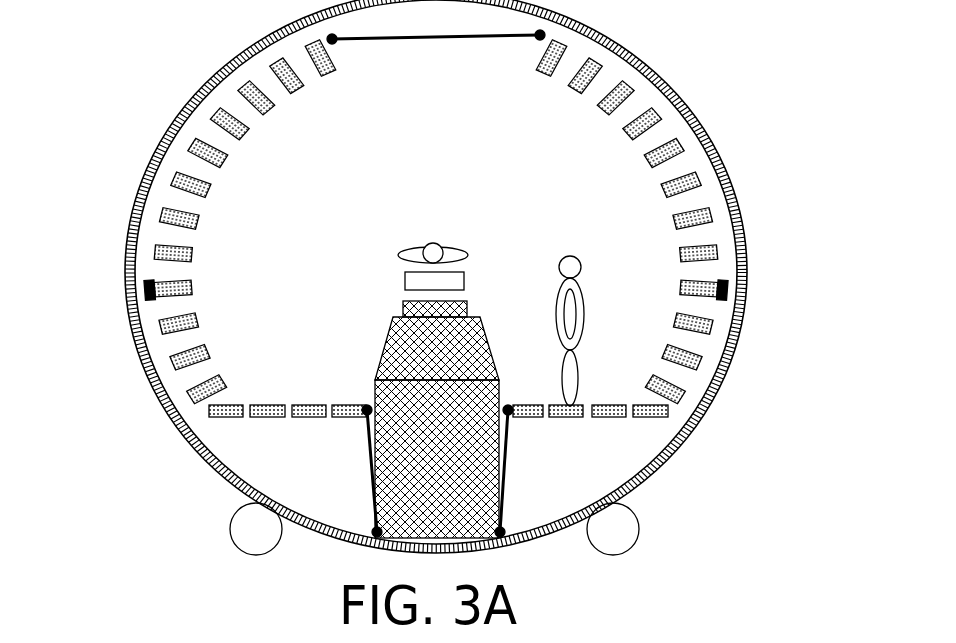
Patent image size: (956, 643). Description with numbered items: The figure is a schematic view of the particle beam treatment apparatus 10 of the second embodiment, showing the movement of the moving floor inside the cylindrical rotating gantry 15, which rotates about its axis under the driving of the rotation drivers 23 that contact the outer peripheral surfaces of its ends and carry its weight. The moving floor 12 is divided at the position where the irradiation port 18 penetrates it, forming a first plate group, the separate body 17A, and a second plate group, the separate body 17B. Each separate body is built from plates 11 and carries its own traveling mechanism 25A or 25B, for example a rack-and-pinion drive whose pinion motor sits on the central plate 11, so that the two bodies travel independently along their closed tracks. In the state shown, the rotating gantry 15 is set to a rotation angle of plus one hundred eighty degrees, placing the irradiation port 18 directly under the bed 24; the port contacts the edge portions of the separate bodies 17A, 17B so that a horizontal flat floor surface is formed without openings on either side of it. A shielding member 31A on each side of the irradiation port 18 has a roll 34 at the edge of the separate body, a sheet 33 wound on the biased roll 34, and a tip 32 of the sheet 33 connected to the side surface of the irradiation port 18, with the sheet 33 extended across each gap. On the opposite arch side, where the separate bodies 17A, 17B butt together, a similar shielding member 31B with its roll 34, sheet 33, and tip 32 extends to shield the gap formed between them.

The particle beam treatment apparatus 10 is at (176, 66).
The rotating gantry 15 is at (136, 196).
The moving floor 12 is at (436, 222).
The separate body (first plate group) 17A is at (665, 216).
The separate body (second plate group) 17B is at (200, 240).
The traveling mechanism 25A is at (727, 282).
The traveling mechanism 25B is at (147, 291).
The shielding member 31B is at (436, 93).
The tip of the sheet 32 is at (333, 44).
The sheet 33 is at (437, 42).
The roll 34 is at (513, 68).
The plate 11 is at (348, 404).
The shielding member 31A is at (372, 477).
The irradiation port 18 is at (392, 320).
The bed 24 is at (466, 282).
The rotation driver 23 is at (232, 528).